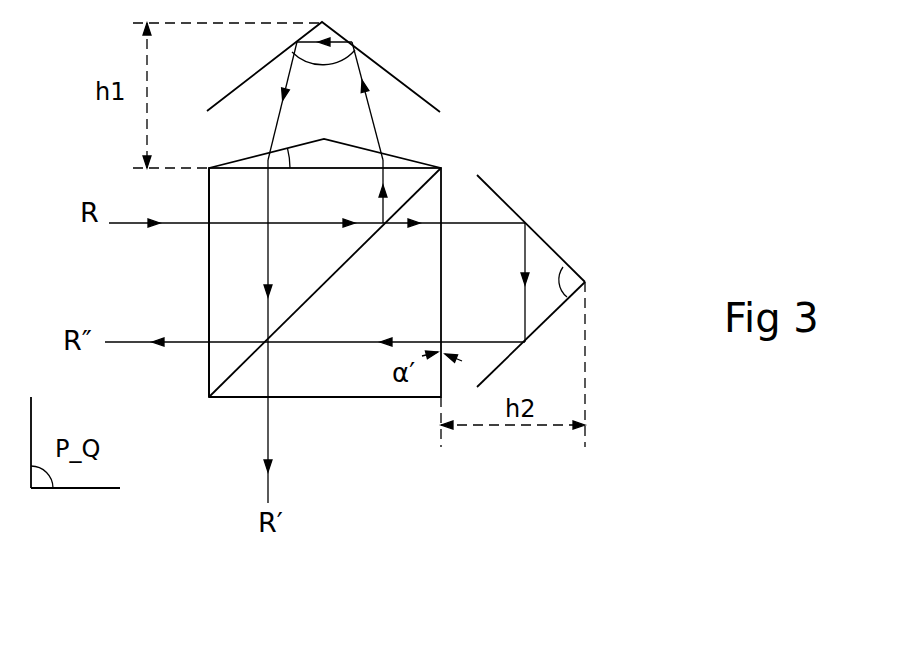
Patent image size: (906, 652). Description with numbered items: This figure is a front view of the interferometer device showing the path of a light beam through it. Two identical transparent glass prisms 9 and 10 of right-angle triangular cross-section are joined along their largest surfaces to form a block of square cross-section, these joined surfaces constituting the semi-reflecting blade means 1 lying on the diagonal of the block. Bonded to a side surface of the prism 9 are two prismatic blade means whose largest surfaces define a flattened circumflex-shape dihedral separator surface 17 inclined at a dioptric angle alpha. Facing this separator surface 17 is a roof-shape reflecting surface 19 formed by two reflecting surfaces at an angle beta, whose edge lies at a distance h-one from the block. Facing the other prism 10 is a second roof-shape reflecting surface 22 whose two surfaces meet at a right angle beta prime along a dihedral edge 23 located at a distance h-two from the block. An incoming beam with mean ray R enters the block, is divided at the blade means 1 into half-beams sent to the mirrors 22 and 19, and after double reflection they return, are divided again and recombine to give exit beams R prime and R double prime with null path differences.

The blade means 1 is at (328, 280).
The transparent prism 9 is at (209, 375).
The transparent prism 10 is at (333, 397).
The flattened circumflex-shape dihedral separator surface 17 is at (363, 148).
The roof-shape reflecting surface 19 is at (390, 72).
The roof-shape reflecting surface 22 is at (500, 197).
The dihedral edge 23 is at (587, 285).